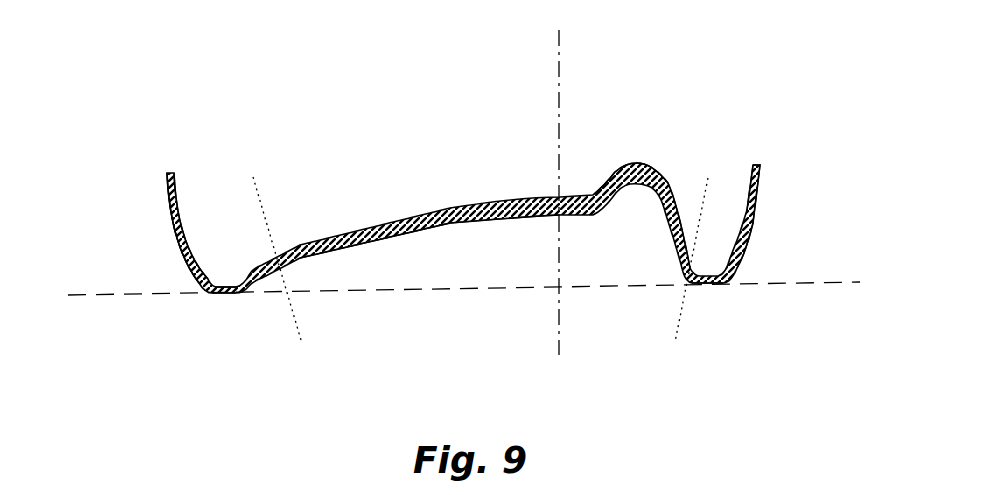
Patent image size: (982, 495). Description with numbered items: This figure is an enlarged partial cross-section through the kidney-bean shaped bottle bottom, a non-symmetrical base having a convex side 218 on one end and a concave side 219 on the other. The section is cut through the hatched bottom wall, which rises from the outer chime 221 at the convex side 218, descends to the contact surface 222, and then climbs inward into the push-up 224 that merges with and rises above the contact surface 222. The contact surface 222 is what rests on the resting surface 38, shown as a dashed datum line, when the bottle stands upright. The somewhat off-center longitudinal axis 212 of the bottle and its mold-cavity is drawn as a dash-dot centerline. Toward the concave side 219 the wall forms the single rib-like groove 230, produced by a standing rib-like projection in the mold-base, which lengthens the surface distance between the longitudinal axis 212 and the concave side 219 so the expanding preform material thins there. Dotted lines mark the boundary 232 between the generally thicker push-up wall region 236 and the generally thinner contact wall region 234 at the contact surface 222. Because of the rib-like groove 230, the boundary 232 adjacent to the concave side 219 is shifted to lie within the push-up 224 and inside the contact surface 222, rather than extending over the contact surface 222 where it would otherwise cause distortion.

The resting surface 38 is at (157, 295).
The longitudinal axis 212 is at (558, 127).
The convex side 218 is at (171, 215).
The concave side 219 is at (757, 222).
The chime 221 is at (190, 277).
The contact surface 222 is at (231, 295).
The push-up 224 is at (457, 223).
The rib-like groove 230 is at (643, 185).
The boundary 232 is at (268, 177).
The contact wall region 234 is at (212, 297).
The push-up wall region 236 is at (421, 221).